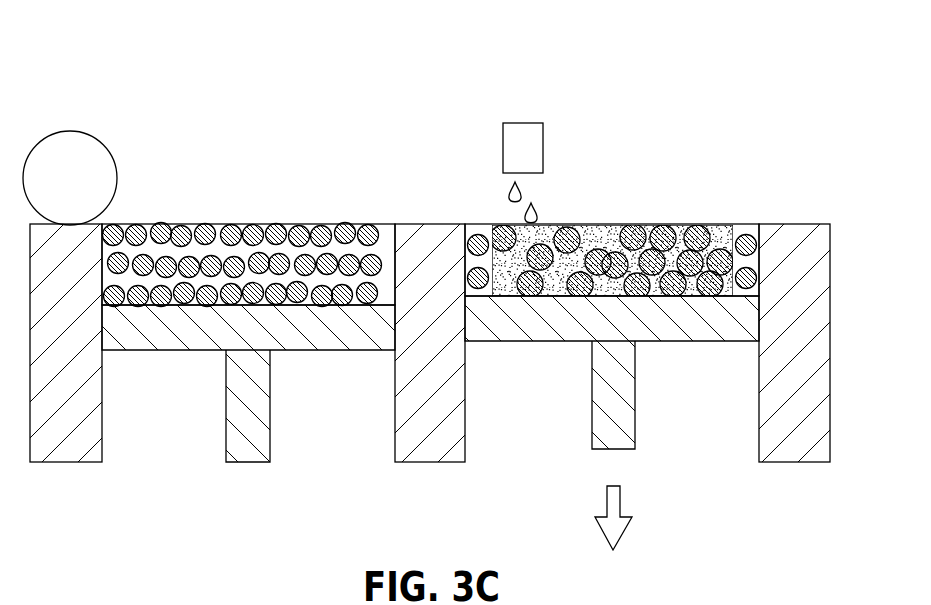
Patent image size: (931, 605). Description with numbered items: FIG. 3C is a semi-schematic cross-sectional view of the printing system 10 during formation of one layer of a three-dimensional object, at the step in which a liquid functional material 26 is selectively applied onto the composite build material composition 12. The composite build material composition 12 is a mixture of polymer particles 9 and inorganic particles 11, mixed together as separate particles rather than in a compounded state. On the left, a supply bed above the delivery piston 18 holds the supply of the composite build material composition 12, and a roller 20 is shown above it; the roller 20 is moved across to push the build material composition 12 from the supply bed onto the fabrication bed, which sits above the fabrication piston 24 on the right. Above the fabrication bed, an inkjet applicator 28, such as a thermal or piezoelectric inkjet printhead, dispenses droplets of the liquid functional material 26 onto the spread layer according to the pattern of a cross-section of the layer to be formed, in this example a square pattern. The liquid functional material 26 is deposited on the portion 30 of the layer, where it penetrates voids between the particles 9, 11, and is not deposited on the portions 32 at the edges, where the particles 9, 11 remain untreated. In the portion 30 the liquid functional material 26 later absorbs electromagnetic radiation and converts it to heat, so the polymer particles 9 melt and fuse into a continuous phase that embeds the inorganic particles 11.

The printing system 10 is at (728, 106).
The polymer particle 9 is at (228, 265).
The inorganic particle 11 is at (313, 243).
The composite build material composition 12 is at (482, 266).
The delivery piston 18 is at (250, 434).
The roller 20 is at (72, 156).
The fabrication piston 24 is at (615, 410).
The liquid functional material 26 is at (538, 210).
The inkjet applicator 28 is at (522, 142).
The portion 30 is at (722, 343).
The portion 32 is at (474, 224).